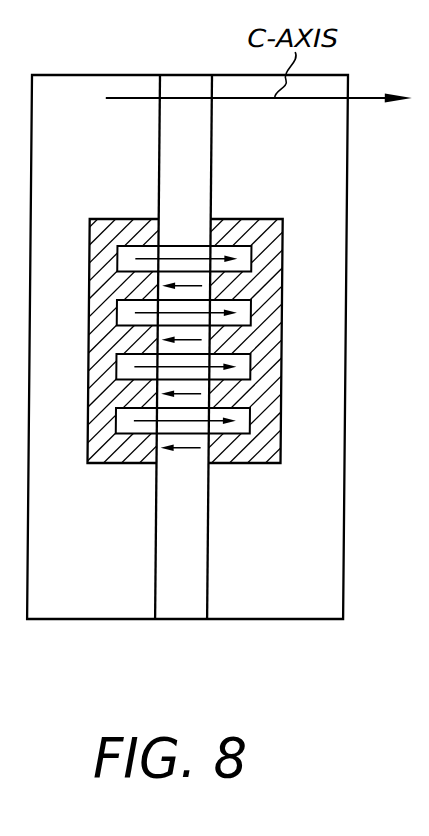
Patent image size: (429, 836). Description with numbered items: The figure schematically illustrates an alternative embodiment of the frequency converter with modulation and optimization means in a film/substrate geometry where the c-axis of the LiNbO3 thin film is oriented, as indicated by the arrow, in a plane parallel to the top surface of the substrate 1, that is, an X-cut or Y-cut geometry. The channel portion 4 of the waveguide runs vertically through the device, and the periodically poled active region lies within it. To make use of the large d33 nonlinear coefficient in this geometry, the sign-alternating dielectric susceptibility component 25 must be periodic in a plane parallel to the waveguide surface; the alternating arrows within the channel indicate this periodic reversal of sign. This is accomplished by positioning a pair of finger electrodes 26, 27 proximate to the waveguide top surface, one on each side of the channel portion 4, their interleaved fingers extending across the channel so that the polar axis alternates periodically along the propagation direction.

The substrate 1 is at (328, 505).
The channel waveguide 4 is at (168, 548).
The sign-alternating dielectric susceptibility component 25 is at (188, 258).
The finger electrode 26 is at (91, 417).
The finger electrode 27 is at (275, 428).